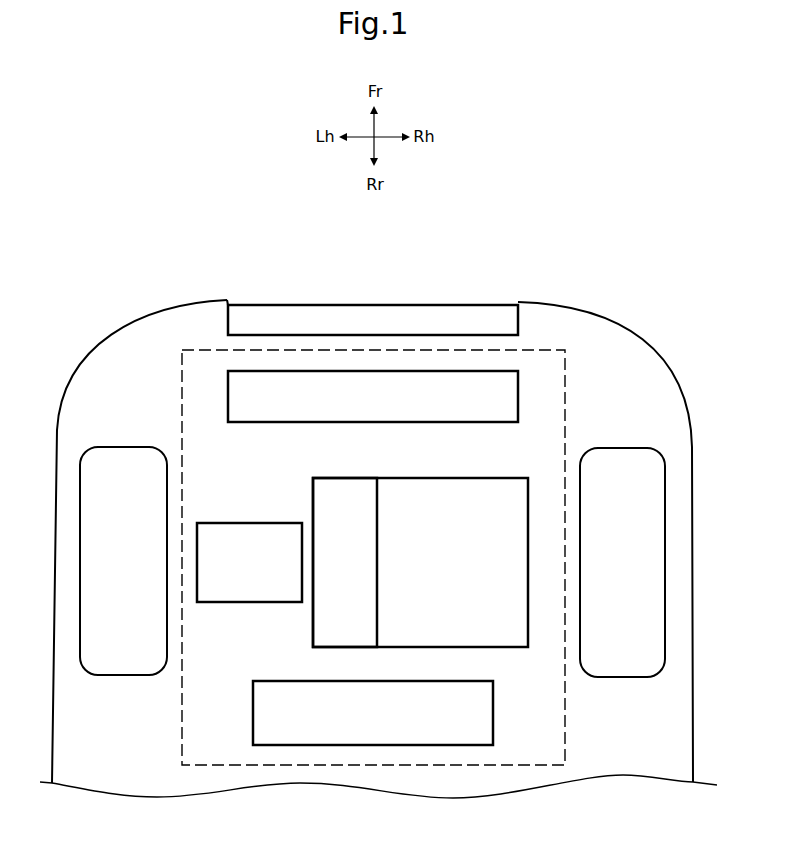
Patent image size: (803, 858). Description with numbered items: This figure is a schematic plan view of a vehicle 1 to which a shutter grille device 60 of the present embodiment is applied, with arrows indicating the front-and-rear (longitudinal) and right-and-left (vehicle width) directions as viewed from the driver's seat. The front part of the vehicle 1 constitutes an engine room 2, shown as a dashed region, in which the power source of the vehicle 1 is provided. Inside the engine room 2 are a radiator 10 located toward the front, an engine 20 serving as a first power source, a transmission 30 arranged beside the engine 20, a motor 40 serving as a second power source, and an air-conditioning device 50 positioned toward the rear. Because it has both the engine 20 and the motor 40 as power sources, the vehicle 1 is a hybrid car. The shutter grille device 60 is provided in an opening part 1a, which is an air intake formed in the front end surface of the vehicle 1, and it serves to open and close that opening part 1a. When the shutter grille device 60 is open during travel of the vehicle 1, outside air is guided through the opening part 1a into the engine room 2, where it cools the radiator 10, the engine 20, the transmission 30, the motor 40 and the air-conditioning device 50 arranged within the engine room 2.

The vehicle 1 is at (118, 303).
The opening part 1a is at (235, 300).
The engine room 2 is at (180, 395).
The radiator 10 is at (526, 398).
The engine 20 is at (460, 492).
The transmission 30 is at (345, 492).
The motor 40 is at (250, 530).
The air-conditioning device 50 is at (495, 717).
The shutter grille device 60 is at (375, 318).